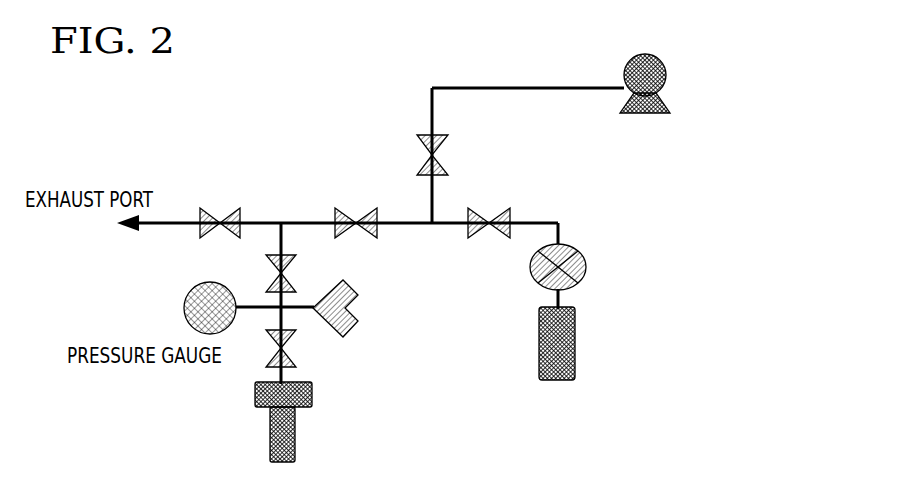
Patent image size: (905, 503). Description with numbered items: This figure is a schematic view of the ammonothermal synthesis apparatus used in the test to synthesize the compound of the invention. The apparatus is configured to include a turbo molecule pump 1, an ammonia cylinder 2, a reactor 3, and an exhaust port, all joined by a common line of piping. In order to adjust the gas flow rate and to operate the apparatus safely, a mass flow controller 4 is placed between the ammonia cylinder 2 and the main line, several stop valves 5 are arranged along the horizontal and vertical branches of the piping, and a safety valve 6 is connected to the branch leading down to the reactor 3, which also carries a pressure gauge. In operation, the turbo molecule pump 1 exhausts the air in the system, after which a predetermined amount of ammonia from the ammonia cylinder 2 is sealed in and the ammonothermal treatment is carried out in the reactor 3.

The turbo molecule pump 1 is at (668, 102).
The ammonia cylinder 2 is at (678, 343).
The reactor 3 is at (346, 422).
The mass flow controller 4 is at (691, 267).
The stop valve 5 is at (355, 251).
The safety valve 6 is at (417, 308).